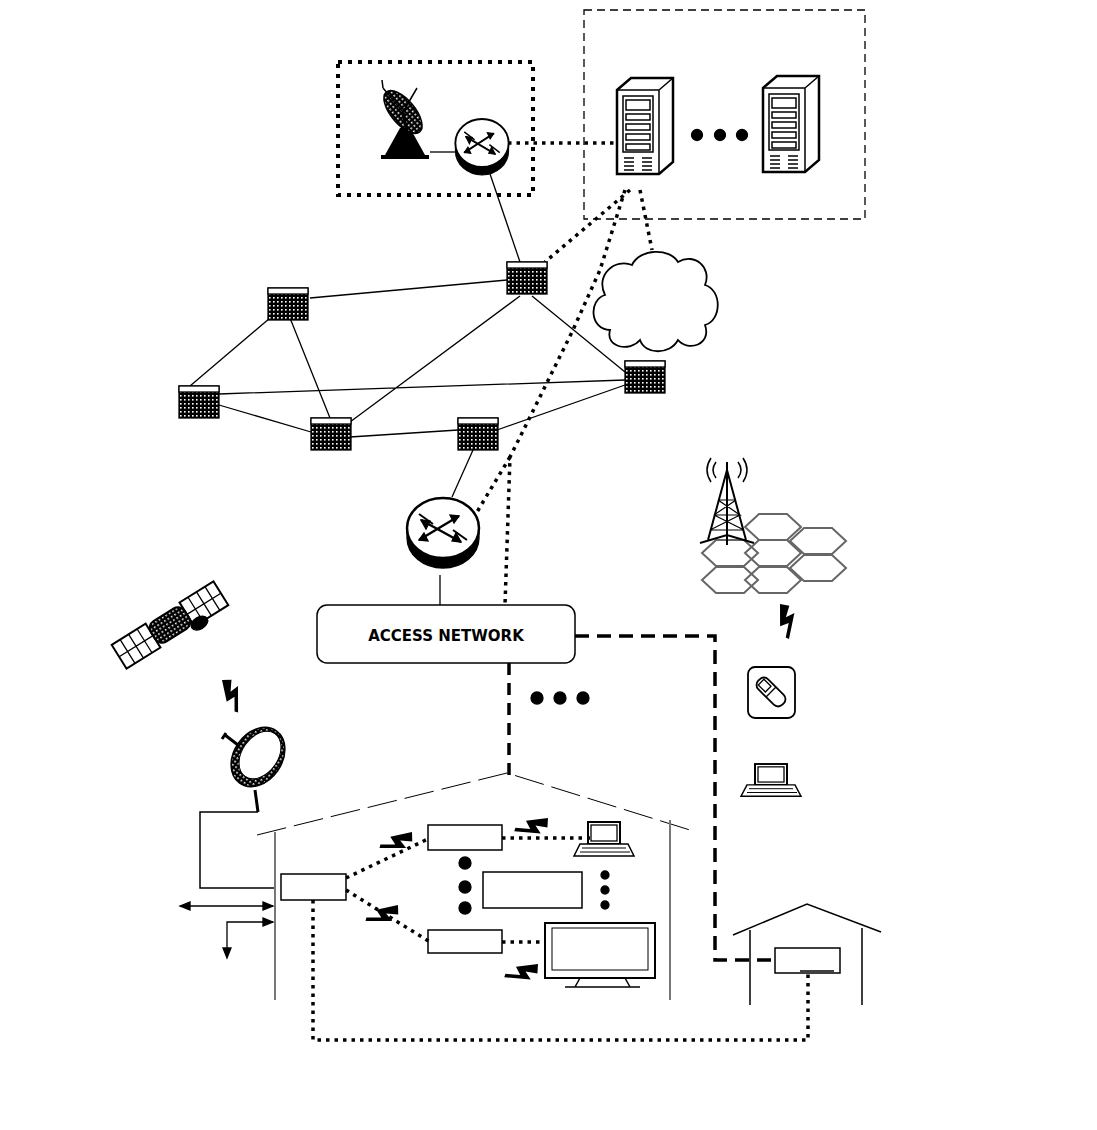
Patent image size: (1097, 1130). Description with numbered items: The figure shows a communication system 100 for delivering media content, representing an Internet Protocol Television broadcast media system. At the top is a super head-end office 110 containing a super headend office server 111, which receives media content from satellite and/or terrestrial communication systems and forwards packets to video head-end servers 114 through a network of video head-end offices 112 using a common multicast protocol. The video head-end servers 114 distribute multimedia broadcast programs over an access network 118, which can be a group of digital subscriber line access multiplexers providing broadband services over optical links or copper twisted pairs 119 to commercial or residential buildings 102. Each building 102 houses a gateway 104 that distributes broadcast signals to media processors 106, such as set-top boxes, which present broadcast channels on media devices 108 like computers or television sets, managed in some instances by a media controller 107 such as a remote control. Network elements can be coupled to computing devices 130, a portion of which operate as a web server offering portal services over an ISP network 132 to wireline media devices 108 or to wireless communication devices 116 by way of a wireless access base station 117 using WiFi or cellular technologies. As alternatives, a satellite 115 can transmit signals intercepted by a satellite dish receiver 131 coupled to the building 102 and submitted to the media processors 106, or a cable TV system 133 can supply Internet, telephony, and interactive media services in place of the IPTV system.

The communication system 100 is at (193, 149).
The buildings 102 is at (512, 1022).
The gateway 104 is at (340, 897).
The media processors 106 is at (499, 848).
The media controller 107 is at (570, 901).
The media devices 108 is at (610, 822).
The super head-end office 110 is at (338, 134).
The super headend office server 111 is at (458, 130).
The network of video head-end offices 112 is at (179, 403).
The video head-end servers 114 is at (407, 537).
The satellite 115 is at (132, 632).
The wireless communication devices 116 is at (795, 680).
The wireless access base station 117 is at (772, 514).
The access network 118 is at (575, 629).
The optical links or copper twisted pairs 119 is at (505, 746).
The computing devices 130 is at (795, 84).
The satellite dish receiver 131 is at (188, 802).
The ISP network 132 is at (635, 334).
The cable TV system 133 is at (182, 1014).